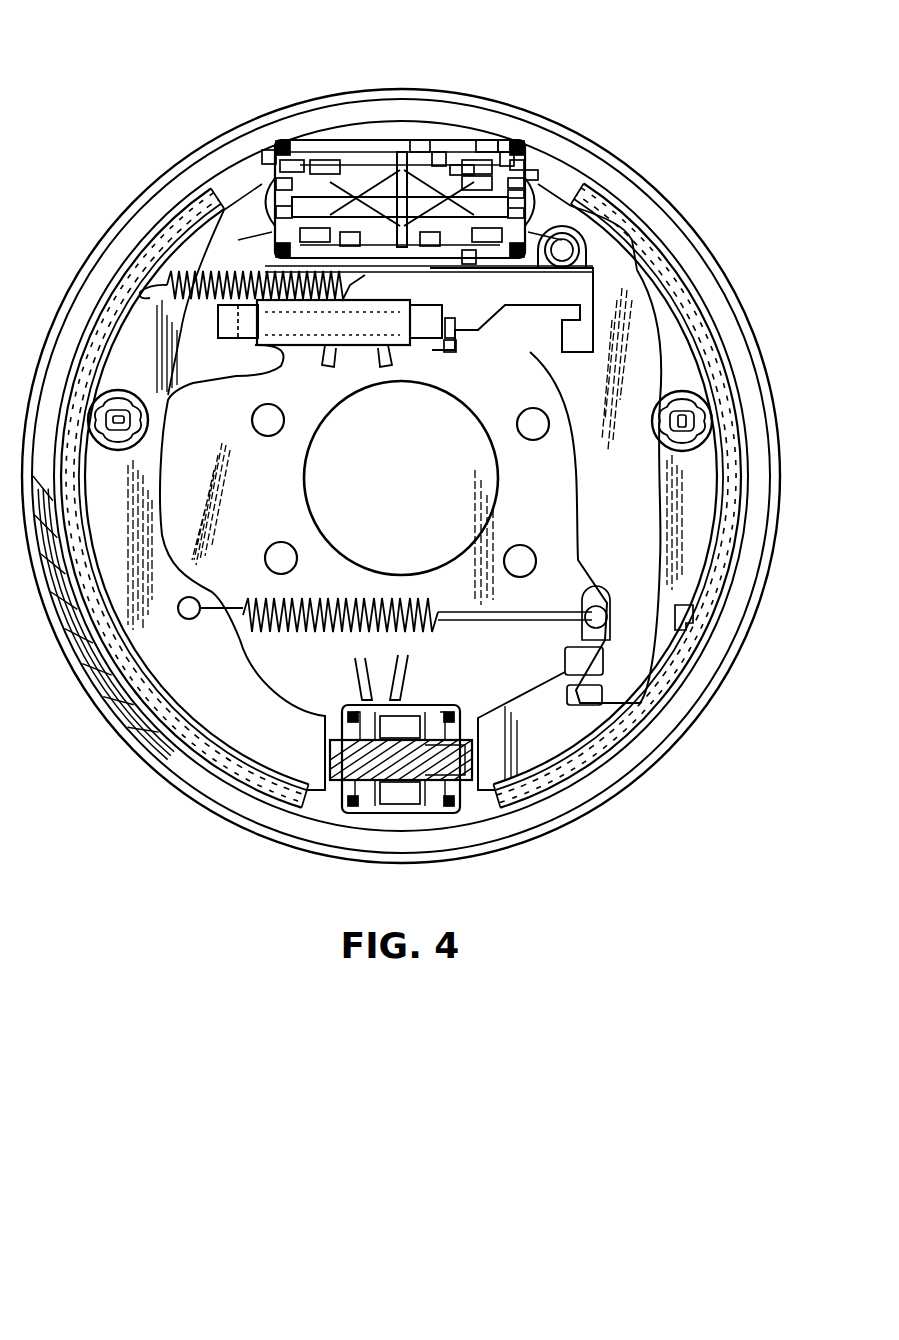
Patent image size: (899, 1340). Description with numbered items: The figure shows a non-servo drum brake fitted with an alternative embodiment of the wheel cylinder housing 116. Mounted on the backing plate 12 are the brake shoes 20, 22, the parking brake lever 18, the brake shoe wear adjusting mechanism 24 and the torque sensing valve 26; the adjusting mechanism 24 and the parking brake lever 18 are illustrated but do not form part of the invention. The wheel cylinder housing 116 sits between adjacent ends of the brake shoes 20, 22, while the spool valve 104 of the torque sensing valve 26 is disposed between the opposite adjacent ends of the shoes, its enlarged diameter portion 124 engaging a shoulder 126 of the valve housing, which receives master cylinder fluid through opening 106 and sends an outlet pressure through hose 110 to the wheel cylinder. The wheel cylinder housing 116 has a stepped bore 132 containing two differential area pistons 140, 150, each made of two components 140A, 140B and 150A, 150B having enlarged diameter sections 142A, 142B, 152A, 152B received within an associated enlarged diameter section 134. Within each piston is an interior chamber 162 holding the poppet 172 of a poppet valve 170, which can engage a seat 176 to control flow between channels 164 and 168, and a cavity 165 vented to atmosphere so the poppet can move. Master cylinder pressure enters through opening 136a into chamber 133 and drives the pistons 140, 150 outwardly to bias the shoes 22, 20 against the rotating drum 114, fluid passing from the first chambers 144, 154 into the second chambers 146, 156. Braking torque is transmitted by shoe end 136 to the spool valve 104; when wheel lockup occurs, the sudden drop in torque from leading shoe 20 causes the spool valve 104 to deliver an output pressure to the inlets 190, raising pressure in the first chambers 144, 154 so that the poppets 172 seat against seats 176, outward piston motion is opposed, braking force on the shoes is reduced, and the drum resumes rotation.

The backing plate 12 is at (277, 501).
The parking brake lever 18 is at (608, 563).
The brake shoe 20 is at (90, 498).
The brake shoe 22 is at (688, 498).
The brake shoe wear adjusting mechanism 24 is at (361, 364).
The torque sensing valve 26 is at (404, 815).
The spool valve 104 is at (445, 778).
The opening 106 is at (408, 665).
The hose 110 is at (330, 360).
The rotating element 114 is at (152, 742).
The wheel cylinder housing 116 is at (520, 140).
The enlarged diameter portion 124 is at (416, 716).
The shoulder 126 is at (395, 800).
The stepped bore 132 is at (408, 175).
The chamber 133 is at (440, 160).
The enlarged diameter section 134 is at (524, 746).
The shoe end 136 is at (312, 749).
The opening 136a is at (428, 250).
The differential area piston 140 is at (472, 160).
The piston component 140A is at (528, 214).
The piston component 140B is at (470, 264).
The enlarged diameter section 142A is at (512, 150).
The enlarged diameter section 142B is at (482, 140).
The first chamber 144 is at (530, 152).
The second chamber 146 is at (470, 165).
The differential area piston 150 is at (370, 160).
The piston component 150A is at (278, 208).
The piston component 150B is at (420, 140).
The enlarged diameter section 152A is at (278, 196).
The enlarged diameter section 152B is at (360, 250).
The first chamber 154 is at (340, 150).
The second chamber 156 is at (382, 170).
The interior chamber 162 is at (522, 182).
The channel 164 is at (264, 152).
The cavity 165 is at (456, 160).
The channel 168 is at (482, 150).
The poppet valve 170 is at (290, 170).
The poppet 172 is at (525, 192).
The seat 176 is at (345, 160).
The inlet 190 is at (540, 186).